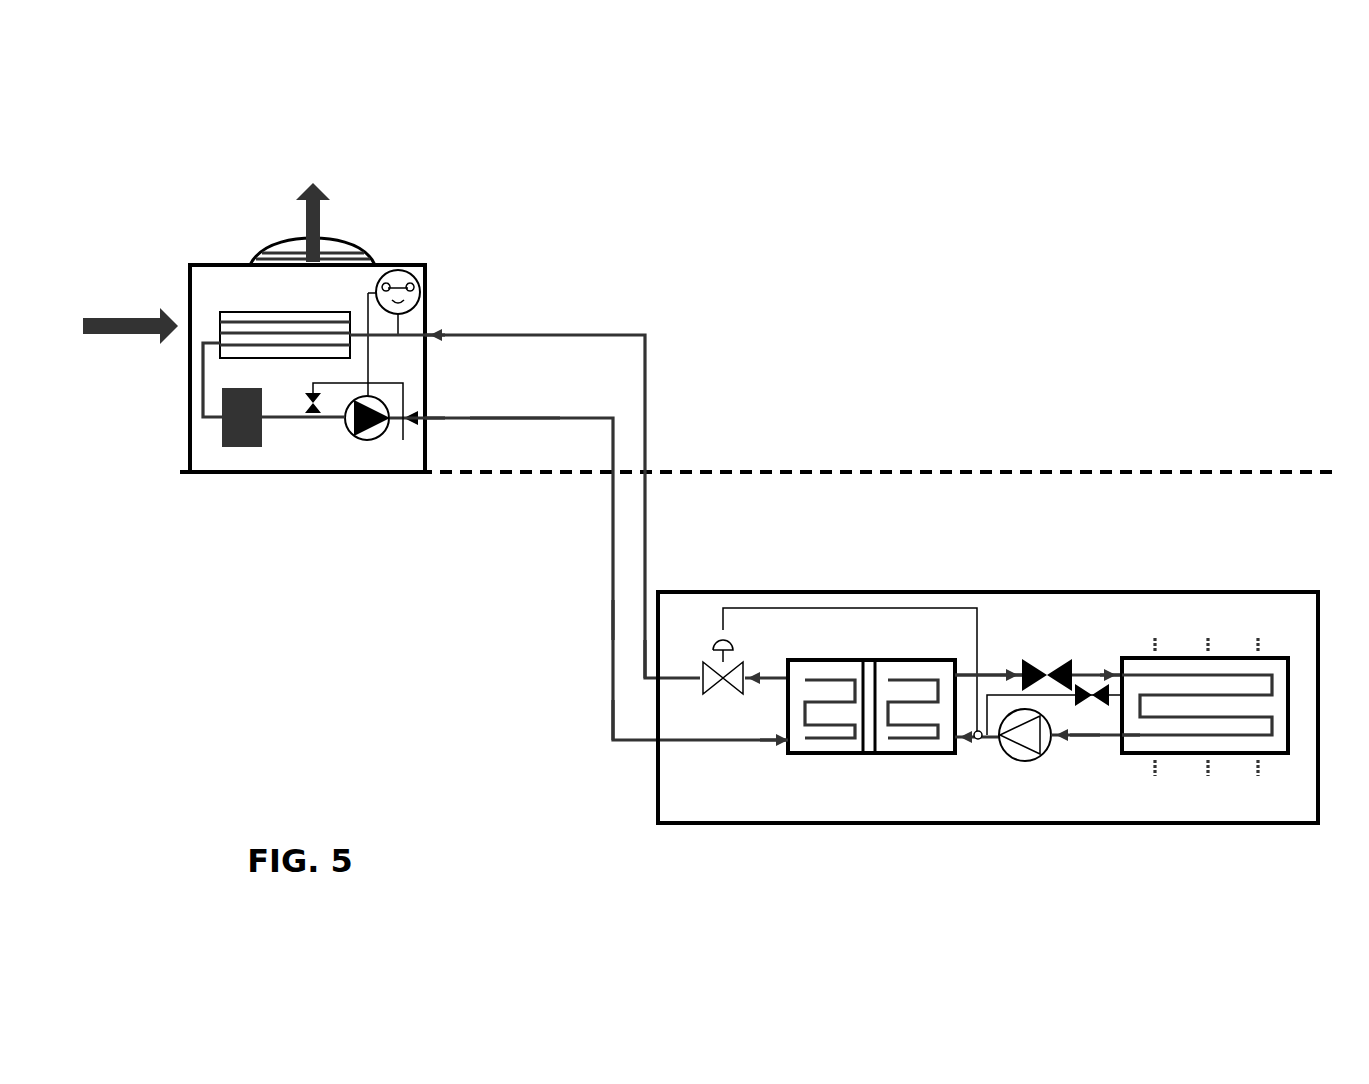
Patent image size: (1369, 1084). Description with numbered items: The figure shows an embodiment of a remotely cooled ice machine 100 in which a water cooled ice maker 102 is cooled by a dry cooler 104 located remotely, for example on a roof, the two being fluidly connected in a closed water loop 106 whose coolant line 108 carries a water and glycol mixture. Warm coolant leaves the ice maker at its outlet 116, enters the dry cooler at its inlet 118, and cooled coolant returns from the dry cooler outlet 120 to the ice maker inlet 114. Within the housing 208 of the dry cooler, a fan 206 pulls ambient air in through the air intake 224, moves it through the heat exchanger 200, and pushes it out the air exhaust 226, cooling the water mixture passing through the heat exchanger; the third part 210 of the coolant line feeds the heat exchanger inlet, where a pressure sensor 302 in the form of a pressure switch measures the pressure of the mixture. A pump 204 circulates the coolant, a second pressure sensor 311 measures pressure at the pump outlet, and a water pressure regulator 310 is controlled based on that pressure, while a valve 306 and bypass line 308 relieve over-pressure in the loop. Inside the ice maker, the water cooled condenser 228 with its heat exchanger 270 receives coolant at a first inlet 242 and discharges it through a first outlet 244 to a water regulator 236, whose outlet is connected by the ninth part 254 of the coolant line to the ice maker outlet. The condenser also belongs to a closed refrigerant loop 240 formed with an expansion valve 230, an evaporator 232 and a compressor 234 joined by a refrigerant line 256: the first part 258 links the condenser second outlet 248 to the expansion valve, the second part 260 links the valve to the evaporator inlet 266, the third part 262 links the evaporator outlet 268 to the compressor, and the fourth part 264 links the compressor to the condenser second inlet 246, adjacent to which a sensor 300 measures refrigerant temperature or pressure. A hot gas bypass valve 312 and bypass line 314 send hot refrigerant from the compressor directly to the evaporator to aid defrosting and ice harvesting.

The remotely cooled ice machine 100 is at (471, 654).
The water cooled ice maker 102 is at (1265, 582).
The dry cooler 104 is at (339, 199).
The closed water loop 106 is at (661, 309).
The coolant line 108 is at (525, 430).
The inlet of the water cooled ice maker 114 is at (611, 744).
The outlet of the water cooled ice maker 116 is at (611, 629).
The inlet of the dry cooler 118 is at (643, 333).
The outlet of the dry cooler 120 is at (432, 421).
The heat exchanger 200 is at (243, 311).
The pump 204 is at (337, 435).
The fan 206 is at (271, 238).
The housing 208 is at (385, 272).
The third part of the coolant line 210 is at (433, 325).
The air intake 224 is at (188, 312).
The air exhaust 226 is at (293, 243).
The water cooled condenser 228 is at (787, 752).
The expansion valve 230 is at (1067, 672).
The evaporator 232 is at (1275, 756).
The compressor 234 is at (1047, 746).
The water regulator 236 is at (712, 678).
The closed refrigerant loop 240 is at (988, 650).
The first inlet of the water cooled condenser 242 is at (782, 741).
The first outlet of the water cooled condenser 244 is at (787, 663).
The second inlet of the water cooled condenser 246 is at (960, 745).
The second outlet of the water cooled condenser 248 is at (957, 658).
The ninth part of the coolant line 254 is at (648, 614).
The refrigerant line 256 is at (1011, 659).
The first part of the refrigerant line 258 is at (973, 676).
The second part of the refrigerant line 260 is at (1098, 688).
The third part of the refrigerant line 262 is at (1090, 740).
The fourth part of the refrigerant line 264 is at (1003, 759).
The inlet of the evaporator 266 is at (1114, 673).
The outlet of the evaporator 268 is at (1120, 745).
The heat exchanger 270 is at (808, 754).
The sensor 300 is at (975, 737).
The pressure sensor 302 is at (419, 287).
The valve 306 is at (313, 411).
The bypass line 308 is at (408, 383).
The water pressure regulator 310 is at (428, 416).
The second pressure sensor 311 is at (403, 440).
The valve 312 is at (1130, 722).
The bypass line 314 is at (1140, 712).